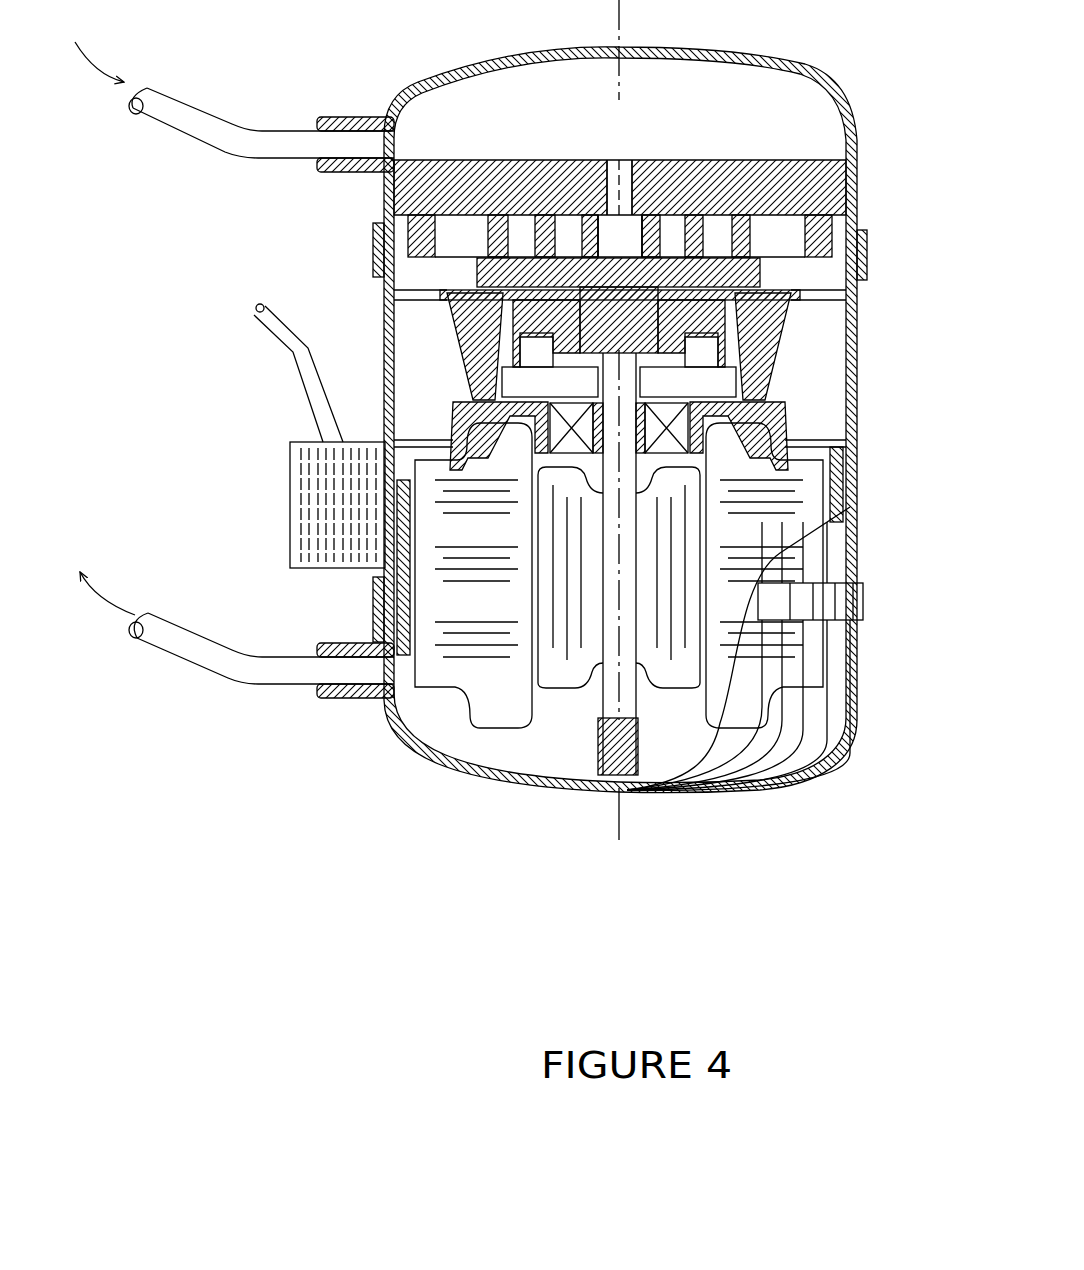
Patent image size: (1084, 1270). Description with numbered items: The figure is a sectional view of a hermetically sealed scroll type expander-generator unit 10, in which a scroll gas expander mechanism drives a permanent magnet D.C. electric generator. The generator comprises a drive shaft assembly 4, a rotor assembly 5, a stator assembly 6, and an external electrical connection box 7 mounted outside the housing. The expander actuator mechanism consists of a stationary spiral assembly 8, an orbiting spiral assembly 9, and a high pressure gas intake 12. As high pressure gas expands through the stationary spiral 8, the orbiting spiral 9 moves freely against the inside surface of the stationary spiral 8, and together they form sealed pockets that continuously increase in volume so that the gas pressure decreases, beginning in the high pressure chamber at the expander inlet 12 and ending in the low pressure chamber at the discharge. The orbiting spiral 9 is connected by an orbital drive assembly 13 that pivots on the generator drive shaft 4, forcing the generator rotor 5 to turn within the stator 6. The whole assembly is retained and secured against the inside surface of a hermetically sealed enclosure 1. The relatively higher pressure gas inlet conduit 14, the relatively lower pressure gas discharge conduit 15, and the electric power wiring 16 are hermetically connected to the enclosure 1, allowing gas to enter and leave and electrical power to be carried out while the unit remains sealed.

The hermetically sealed enclosure 1 is at (423, 765).
The drive shaft assembly 4 is at (627, 383).
The rotor assembly 5 is at (688, 485).
The stator assembly 6 is at (807, 493).
The external electrical connection box 7 is at (300, 500).
The stationary spiral assembly 8 is at (774, 163).
The orbiting spiral assembly 9 is at (758, 268).
The hermetically sealed scroll type expander-generator unit 10 is at (353, 833).
The high pressure gas intake 12 is at (613, 158).
The orbital drive assembly 13 is at (542, 318).
The higher pressure gas inlet conduit 14 is at (308, 127).
The lower pressure gas discharge conduit 15 is at (290, 653).
The electric power wiring 16 is at (293, 340).